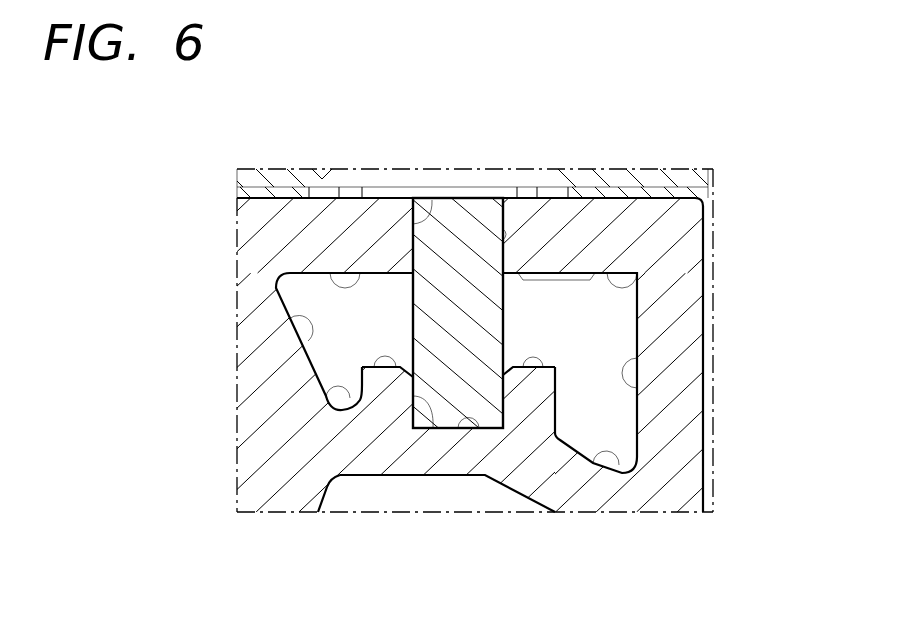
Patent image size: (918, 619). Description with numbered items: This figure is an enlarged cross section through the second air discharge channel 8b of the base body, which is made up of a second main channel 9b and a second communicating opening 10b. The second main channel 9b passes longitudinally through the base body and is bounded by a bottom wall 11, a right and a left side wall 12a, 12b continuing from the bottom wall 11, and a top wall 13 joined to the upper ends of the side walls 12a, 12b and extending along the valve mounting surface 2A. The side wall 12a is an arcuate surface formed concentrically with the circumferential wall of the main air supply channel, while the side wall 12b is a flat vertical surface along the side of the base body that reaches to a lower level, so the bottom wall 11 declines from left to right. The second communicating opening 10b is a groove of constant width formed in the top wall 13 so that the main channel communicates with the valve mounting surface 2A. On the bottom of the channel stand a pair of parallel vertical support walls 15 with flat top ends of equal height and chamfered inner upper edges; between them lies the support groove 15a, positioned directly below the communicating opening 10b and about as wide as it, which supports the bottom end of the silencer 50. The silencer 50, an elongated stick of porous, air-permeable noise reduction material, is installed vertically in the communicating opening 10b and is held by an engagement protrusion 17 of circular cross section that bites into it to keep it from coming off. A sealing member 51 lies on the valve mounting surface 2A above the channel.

The valve mounting surface 2A is at (545, 187).
The second air discharge channel 8b is at (612, 326).
The second main channel 9b is at (345, 360).
The second communicating opening 10b is at (433, 205).
The bottom wall 11 is at (780, 465).
The side wall 12a is at (293, 322).
The side wall 12b is at (640, 362).
The top wall 13 is at (345, 287).
The support walls 15 is at (373, 368).
The support groove 15a is at (430, 432).
The engagement protrusion 17 is at (500, 238).
The silencer 50 is at (443, 310).
The sealing member 51 is at (667, 180).